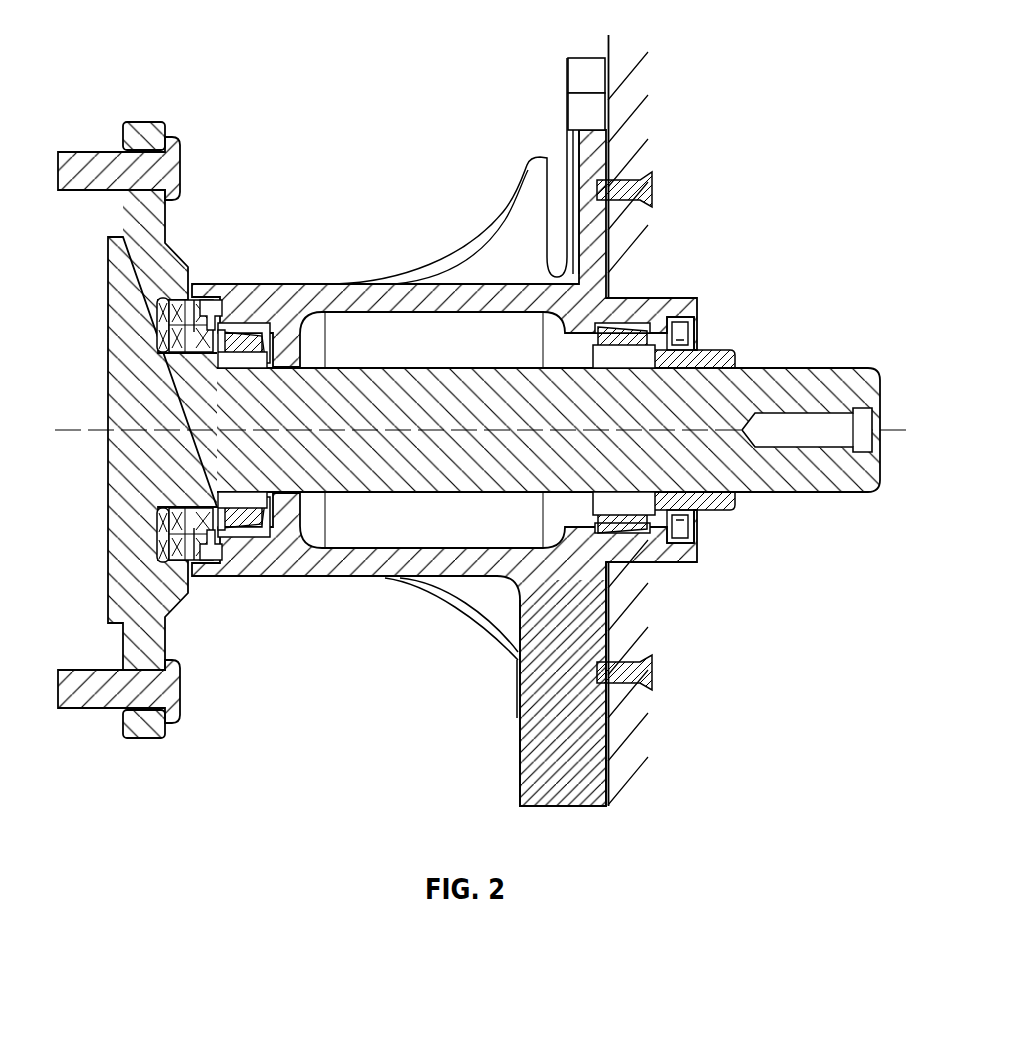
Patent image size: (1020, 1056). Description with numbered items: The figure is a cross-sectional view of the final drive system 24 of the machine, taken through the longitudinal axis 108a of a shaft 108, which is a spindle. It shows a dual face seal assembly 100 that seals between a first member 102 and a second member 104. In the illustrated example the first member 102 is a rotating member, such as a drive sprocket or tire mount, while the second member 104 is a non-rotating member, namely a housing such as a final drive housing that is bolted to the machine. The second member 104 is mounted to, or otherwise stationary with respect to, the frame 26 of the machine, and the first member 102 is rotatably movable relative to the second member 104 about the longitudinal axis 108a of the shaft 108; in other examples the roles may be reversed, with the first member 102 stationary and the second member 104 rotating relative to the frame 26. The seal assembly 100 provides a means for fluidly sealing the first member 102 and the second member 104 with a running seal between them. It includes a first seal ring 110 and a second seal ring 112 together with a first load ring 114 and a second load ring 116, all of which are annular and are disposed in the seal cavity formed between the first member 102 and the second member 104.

The final drive system 24 is at (152, 44).
The frame 26 is at (605, 34).
The dual face seal assembly 100 is at (195, 430).
The first member 102 is at (122, 354).
The second member 104 is at (283, 283).
The shaft 108 is at (783, 483).
The longitudinal axis 108a is at (723, 422).
The first seal ring 110 is at (178, 337).
The second seal ring 112 is at (215, 344).
The first load ring 114 is at (156, 298).
The second load ring 116 is at (200, 302).